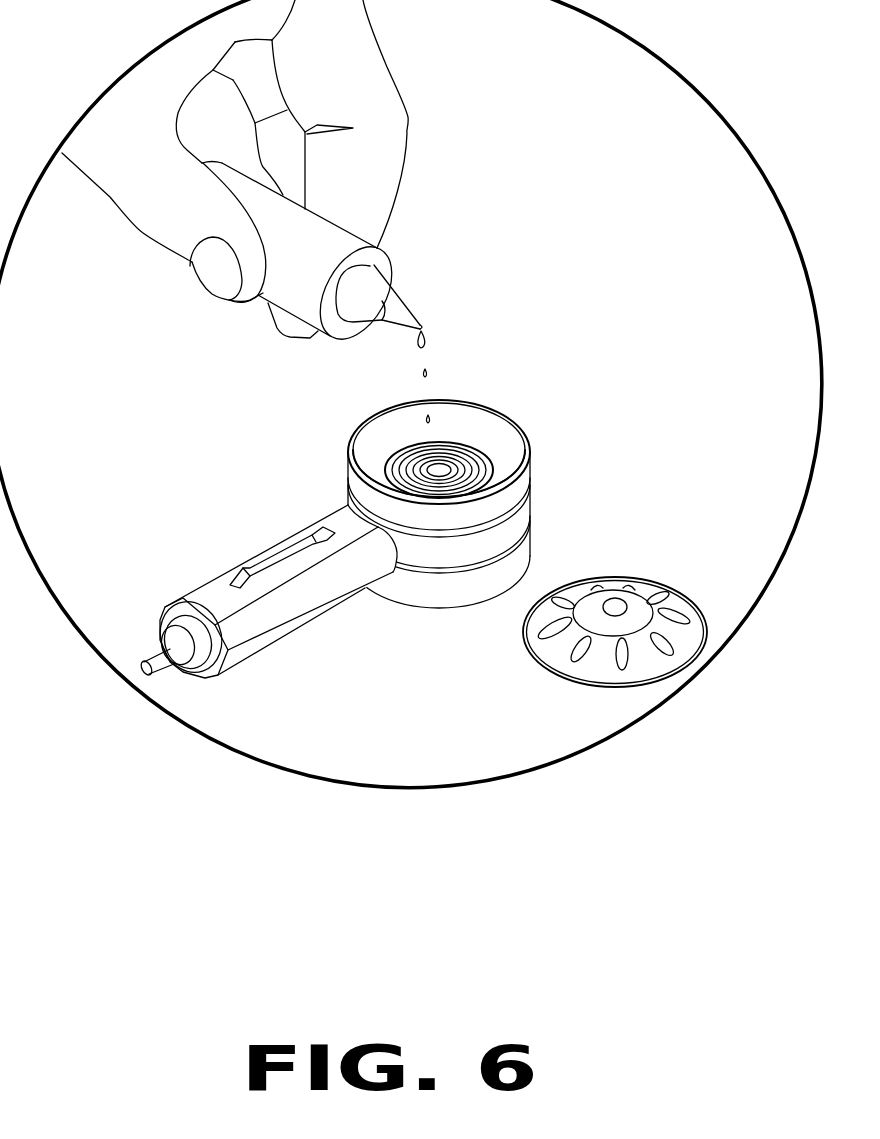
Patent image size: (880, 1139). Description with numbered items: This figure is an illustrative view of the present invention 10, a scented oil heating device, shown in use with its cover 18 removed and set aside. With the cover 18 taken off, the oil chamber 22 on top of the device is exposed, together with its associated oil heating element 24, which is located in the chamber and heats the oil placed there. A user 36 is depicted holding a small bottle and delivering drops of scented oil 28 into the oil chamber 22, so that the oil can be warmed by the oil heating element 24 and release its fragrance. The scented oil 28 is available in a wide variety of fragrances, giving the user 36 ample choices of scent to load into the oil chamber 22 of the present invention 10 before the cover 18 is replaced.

The present invention 10 is at (416, 449).
The cover 18 is at (543, 670).
The oil chamber 22 is at (487, 452).
The oil heating element 24 is at (487, 453).
The scented oil 28 is at (378, 295).
The user 36 is at (388, 133).